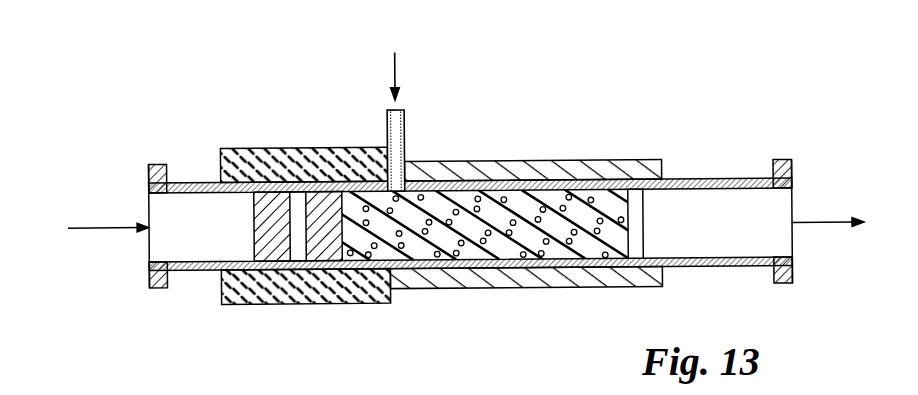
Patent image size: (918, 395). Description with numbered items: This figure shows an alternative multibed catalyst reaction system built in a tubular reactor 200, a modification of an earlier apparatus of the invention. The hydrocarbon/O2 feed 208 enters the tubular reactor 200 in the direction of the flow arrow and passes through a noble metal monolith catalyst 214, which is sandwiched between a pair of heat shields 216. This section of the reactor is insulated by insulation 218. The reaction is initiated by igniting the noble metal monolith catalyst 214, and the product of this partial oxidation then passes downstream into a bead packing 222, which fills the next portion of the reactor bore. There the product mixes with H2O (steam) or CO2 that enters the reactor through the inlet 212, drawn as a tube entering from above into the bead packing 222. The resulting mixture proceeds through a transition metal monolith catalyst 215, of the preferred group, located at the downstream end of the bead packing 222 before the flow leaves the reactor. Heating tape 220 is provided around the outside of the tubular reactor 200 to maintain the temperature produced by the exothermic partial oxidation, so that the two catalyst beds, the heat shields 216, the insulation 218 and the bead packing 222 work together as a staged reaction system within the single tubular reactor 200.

The tubular reactor 200 is at (727, 172).
The hydrocarbon/O2 feed 208 is at (92, 230).
The steam or CO2 inlet 212 is at (405, 128).
The noble metal monolith catalyst 214 is at (297, 170).
The transition metal monolith catalyst 215 is at (634, 196).
The heat shields 216 is at (272, 258).
The insulation 218 is at (302, 263).
The heating tape 220 is at (482, 286).
The bead packing 222 is at (597, 240).